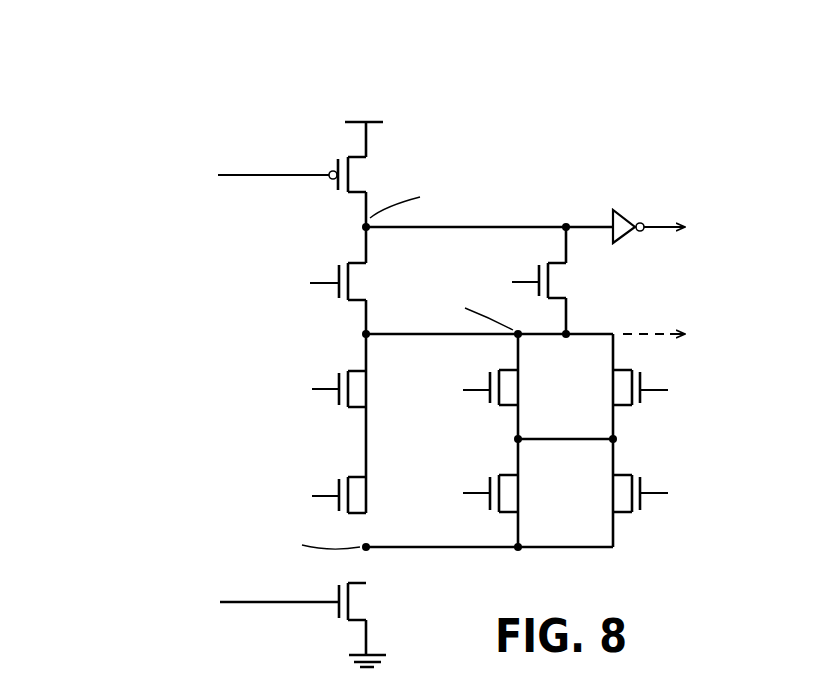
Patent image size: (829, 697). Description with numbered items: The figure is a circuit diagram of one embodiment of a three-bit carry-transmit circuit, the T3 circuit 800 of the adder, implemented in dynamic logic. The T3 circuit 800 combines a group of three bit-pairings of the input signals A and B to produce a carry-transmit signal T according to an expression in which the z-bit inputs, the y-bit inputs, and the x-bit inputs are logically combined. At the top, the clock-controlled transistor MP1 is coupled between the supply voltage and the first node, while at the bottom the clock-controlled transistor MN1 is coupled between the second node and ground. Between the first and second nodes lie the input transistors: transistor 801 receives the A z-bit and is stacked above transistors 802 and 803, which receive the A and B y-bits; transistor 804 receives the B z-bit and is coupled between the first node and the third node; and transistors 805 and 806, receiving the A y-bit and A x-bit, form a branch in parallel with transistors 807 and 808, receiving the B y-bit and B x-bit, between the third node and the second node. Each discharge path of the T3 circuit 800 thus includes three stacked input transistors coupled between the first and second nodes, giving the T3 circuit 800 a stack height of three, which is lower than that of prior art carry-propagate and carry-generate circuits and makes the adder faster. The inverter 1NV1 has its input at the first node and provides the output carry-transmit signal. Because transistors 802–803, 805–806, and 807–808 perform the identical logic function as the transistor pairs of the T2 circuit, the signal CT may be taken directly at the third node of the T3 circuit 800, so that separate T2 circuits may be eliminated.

The T3 circuit 800 is at (196, 60).
The transistor 801 is at (358, 283).
The transistor 802 is at (357, 385).
The transistor 803 is at (357, 492).
The transistor 804 is at (557, 288).
The transistor 805 is at (512, 383).
The transistor 806 is at (512, 490).
The transistor 807 is at (614, 384).
The transistor 808 is at (613, 490).
The transistor MP1 is at (360, 172).
The transistor MN1 is at (367, 602).
The inverter 1NV1 is at (627, 213).